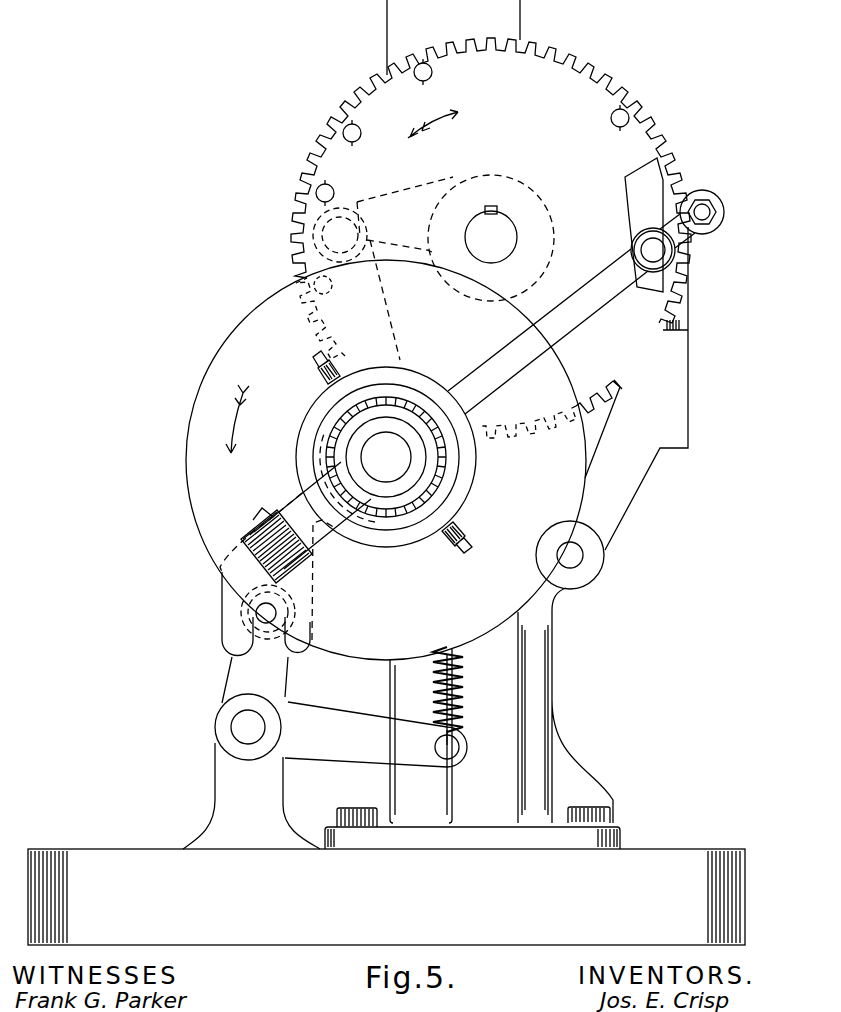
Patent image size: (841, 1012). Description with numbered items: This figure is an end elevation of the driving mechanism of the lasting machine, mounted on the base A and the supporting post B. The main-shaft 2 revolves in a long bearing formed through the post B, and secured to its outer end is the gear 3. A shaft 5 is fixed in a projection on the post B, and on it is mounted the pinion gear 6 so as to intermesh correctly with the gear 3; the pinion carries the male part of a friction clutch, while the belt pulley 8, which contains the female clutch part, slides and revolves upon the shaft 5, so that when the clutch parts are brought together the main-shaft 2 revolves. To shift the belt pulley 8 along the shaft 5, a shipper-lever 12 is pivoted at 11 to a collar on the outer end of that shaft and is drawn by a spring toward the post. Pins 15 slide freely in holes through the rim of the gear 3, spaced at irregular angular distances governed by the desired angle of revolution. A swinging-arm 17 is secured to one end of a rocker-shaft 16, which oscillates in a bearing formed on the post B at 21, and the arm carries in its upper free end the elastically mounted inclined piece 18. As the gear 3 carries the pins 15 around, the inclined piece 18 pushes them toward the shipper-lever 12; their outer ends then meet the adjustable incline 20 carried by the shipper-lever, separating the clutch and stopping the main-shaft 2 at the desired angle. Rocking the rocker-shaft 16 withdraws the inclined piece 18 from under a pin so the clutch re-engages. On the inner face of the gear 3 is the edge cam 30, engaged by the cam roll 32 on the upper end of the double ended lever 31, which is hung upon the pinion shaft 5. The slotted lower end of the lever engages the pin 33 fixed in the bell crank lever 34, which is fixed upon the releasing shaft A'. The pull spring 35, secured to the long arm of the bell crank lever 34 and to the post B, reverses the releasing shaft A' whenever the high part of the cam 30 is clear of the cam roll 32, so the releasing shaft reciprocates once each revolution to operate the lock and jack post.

The main-shaft 2 is at (491, 238).
The gear 3 is at (491, 238).
The shaft 5 is at (386, 452).
The pinion gear 6 is at (336, 452).
The belt pulley 8 is at (386, 460).
The pivot 11 is at (271, 539).
The shipper-lever 12 is at (474, 391).
The pins 15 is at (432, 73).
The rocker-shaft 16 is at (584, 556).
The swinging-arm 17 is at (636, 445).
The inclined piece 18 is at (690, 273).
The adjustable incline 20 is at (674, 225).
The bearing 21 is at (577, 580).
The edge cam 30 is at (405, 214).
The double ended lever 31 is at (310, 440).
The cam roll 32 is at (322, 232).
The pin 33 is at (258, 613).
The bell crank lever 34 is at (325, 710).
The pull spring 35 is at (432, 689).
The base A is at (386, 897).
The releasing shaft A' is at (227, 727).
The post B is at (458, 702).